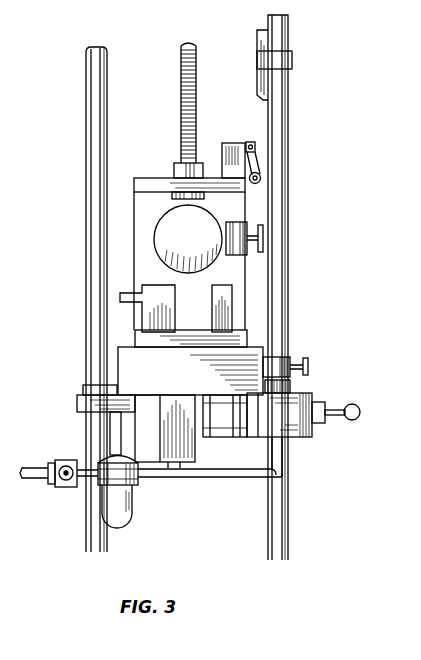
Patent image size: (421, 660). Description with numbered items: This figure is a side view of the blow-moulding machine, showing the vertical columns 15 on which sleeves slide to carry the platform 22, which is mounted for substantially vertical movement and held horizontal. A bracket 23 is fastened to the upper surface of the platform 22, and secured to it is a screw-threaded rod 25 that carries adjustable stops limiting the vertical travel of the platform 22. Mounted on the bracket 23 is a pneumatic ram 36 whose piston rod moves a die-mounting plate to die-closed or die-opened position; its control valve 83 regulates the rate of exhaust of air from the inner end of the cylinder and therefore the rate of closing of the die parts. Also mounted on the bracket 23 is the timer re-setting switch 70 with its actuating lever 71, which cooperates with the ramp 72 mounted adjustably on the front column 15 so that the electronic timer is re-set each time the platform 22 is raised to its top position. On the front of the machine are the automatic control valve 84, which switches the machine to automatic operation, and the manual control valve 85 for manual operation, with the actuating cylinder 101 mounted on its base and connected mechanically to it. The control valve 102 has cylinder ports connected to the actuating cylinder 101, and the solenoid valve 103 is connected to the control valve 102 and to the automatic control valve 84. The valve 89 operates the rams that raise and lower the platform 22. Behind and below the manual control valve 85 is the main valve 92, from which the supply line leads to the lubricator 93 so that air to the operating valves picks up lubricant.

The column 15 is at (96, 130).
The screw-threaded rod 25 is at (182, 56).
The ramp 72 is at (258, 76).
The switch 70 is at (232, 143).
The actuating lever 71 is at (262, 178).
The bracket 23 is at (145, 185).
The pneumatic ram 36 is at (188, 239).
The control valve 83 is at (264, 240).
The solenoid valve 103 is at (168, 311).
The control valve 102 is at (232, 312).
The automatic control valve 84 is at (292, 358).
The platform 22 is at (190, 371).
The manual control valve 85 is at (302, 400).
The valve 89 is at (183, 432).
The actuating cylinder 101 is at (222, 425).
The main valve 92 is at (63, 459).
The lubricator 93 is at (130, 513).